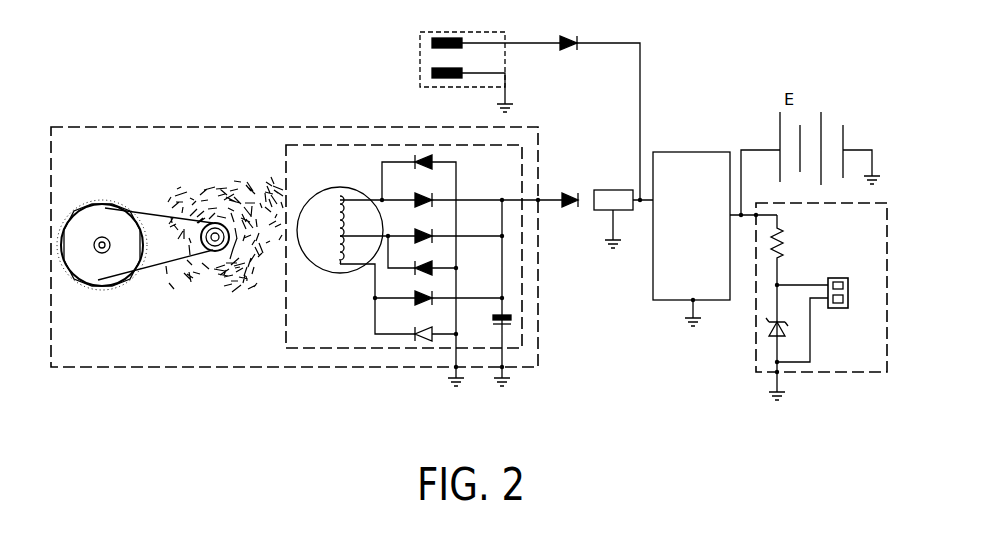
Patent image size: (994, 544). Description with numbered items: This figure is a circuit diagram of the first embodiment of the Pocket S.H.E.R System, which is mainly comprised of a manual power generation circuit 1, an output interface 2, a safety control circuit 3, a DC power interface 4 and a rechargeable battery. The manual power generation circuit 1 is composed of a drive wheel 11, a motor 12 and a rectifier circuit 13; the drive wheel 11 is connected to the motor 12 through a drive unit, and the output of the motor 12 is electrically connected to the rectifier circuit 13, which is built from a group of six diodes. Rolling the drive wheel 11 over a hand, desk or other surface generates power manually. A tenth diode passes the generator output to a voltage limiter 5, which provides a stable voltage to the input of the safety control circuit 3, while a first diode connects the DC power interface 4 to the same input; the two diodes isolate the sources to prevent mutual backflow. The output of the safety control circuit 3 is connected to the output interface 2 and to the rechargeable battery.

The manual power generation circuit 1 is at (155, 325).
The drive wheel 11 is at (104, 258).
The motor 12 is at (215, 240).
The rectifier circuit 13 is at (330, 320).
The DC power interface 4 is at (474, 38).
The voltage limiter 5 is at (605, 205).
The safety control circuit 3 is at (668, 285).
The output interface 2 is at (860, 349).